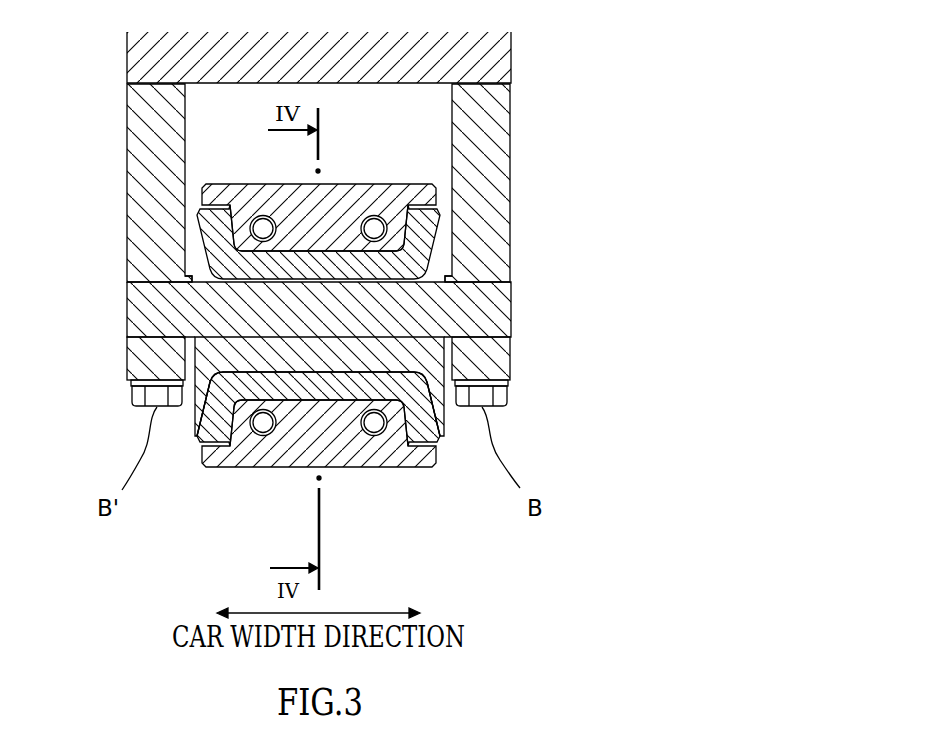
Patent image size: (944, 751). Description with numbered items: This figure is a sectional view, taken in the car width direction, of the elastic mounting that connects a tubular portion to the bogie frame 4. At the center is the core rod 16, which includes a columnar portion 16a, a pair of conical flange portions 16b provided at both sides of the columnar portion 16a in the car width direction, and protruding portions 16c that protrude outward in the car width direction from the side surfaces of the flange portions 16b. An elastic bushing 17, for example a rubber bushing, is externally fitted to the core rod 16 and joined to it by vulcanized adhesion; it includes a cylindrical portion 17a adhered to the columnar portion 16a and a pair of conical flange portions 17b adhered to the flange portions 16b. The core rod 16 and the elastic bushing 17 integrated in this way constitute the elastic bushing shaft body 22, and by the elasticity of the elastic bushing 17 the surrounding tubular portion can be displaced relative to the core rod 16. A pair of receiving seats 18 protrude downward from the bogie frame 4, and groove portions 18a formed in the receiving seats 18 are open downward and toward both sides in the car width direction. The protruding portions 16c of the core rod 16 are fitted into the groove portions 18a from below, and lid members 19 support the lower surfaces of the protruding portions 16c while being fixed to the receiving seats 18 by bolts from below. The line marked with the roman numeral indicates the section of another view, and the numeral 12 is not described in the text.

The bogie frame 4 is at (512, 52).
The support device 12 is at (318, 195).
The core rod 16 is at (336, 297).
The columnar portion 16a is at (288, 350).
The conical flange portions 16b is at (195, 408).
The protruding portions 16c is at (141, 309).
The elastic bushing 17 is at (391, 266).
The cylindrical portion 17a is at (323, 400).
The conical flange portions 17b is at (224, 437).
The receiving seats 18 is at (127, 118).
The groove portions 18a is at (156, 272).
The lid members 19 is at (127, 356).
The elastic bushing shaft body 22 is at (318, 195).